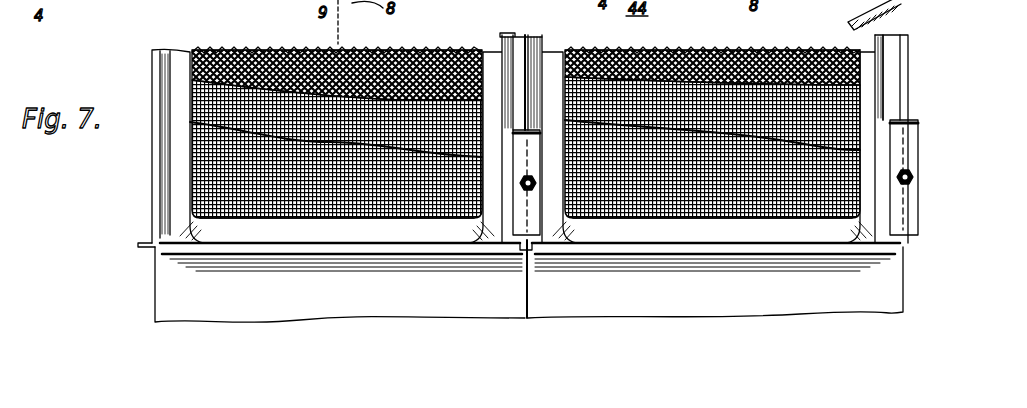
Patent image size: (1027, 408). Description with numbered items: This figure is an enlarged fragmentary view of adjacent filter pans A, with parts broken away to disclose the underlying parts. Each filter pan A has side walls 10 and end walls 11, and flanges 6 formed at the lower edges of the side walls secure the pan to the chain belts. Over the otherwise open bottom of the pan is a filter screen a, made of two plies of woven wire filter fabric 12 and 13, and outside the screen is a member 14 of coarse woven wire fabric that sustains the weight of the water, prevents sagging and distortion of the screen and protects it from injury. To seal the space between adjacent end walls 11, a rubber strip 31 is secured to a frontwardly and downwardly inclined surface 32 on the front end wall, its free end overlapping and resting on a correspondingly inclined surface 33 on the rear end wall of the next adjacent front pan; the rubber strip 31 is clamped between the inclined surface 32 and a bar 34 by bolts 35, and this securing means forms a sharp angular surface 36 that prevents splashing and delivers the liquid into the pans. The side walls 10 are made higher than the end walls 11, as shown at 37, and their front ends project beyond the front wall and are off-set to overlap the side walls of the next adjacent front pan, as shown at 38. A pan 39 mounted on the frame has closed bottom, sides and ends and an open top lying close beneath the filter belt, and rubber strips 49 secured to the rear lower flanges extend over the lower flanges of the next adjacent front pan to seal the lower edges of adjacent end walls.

The flange 6 is at (158, 292).
The side wall 10 is at (327, 232).
The end wall 11 is at (164, 146).
The filter fabric ply 12 is at (415, 200).
The filter fabric ply 13 is at (405, 56).
The supporting member 14 is at (446, 60).
The rubber strip 31 is at (536, 130).
The inclined surface 32 is at (895, 70).
The inclined surface 33 is at (156, 52).
The bar 34 is at (530, 158).
The bolt 35 is at (536, 186).
The sharp angular surface 36 is at (506, 52).
The side wall extension 37 is at (270, 250).
The offset overlap 38 is at (140, 237).
The pan 39 is at (862, 28).
The rubber strip 49 is at (530, 40).
The filter screen a is at (192, 122).
The filter pan A is at (325, 50).